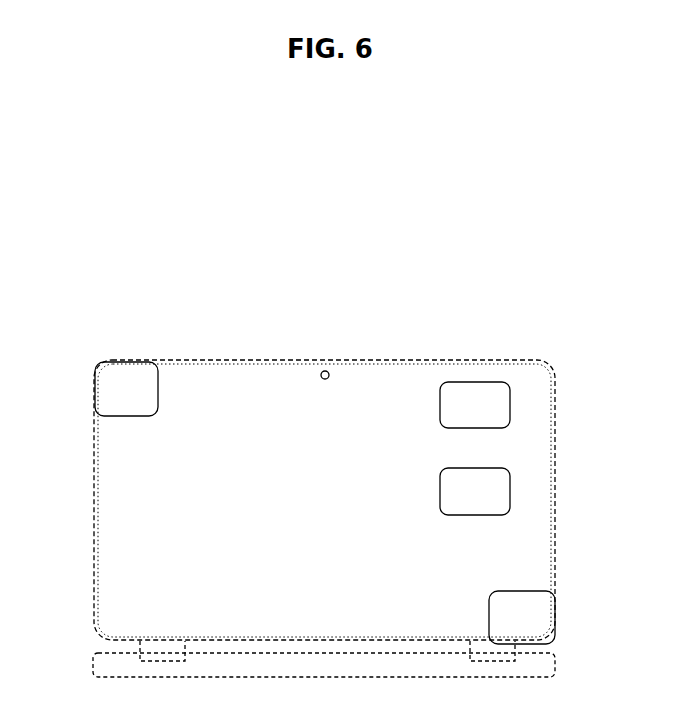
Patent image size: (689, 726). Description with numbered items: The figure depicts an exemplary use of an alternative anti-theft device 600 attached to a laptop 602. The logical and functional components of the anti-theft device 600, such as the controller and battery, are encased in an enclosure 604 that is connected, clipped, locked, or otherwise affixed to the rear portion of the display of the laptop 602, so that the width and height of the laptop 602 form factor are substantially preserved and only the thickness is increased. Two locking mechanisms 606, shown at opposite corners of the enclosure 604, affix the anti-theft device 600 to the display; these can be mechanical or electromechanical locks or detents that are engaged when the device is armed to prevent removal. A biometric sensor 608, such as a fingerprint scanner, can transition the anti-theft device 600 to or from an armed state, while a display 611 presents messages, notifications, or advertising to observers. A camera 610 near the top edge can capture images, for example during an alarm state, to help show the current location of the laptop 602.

The anti-theft device 600 is at (583, 359).
The laptop 602 is at (115, 672).
The enclosure 604 is at (107, 568).
The locking mechanisms 606 is at (107, 393).
The biometric sensor 608 is at (468, 413).
The camera 610 is at (322, 367).
The display 611 is at (468, 500).